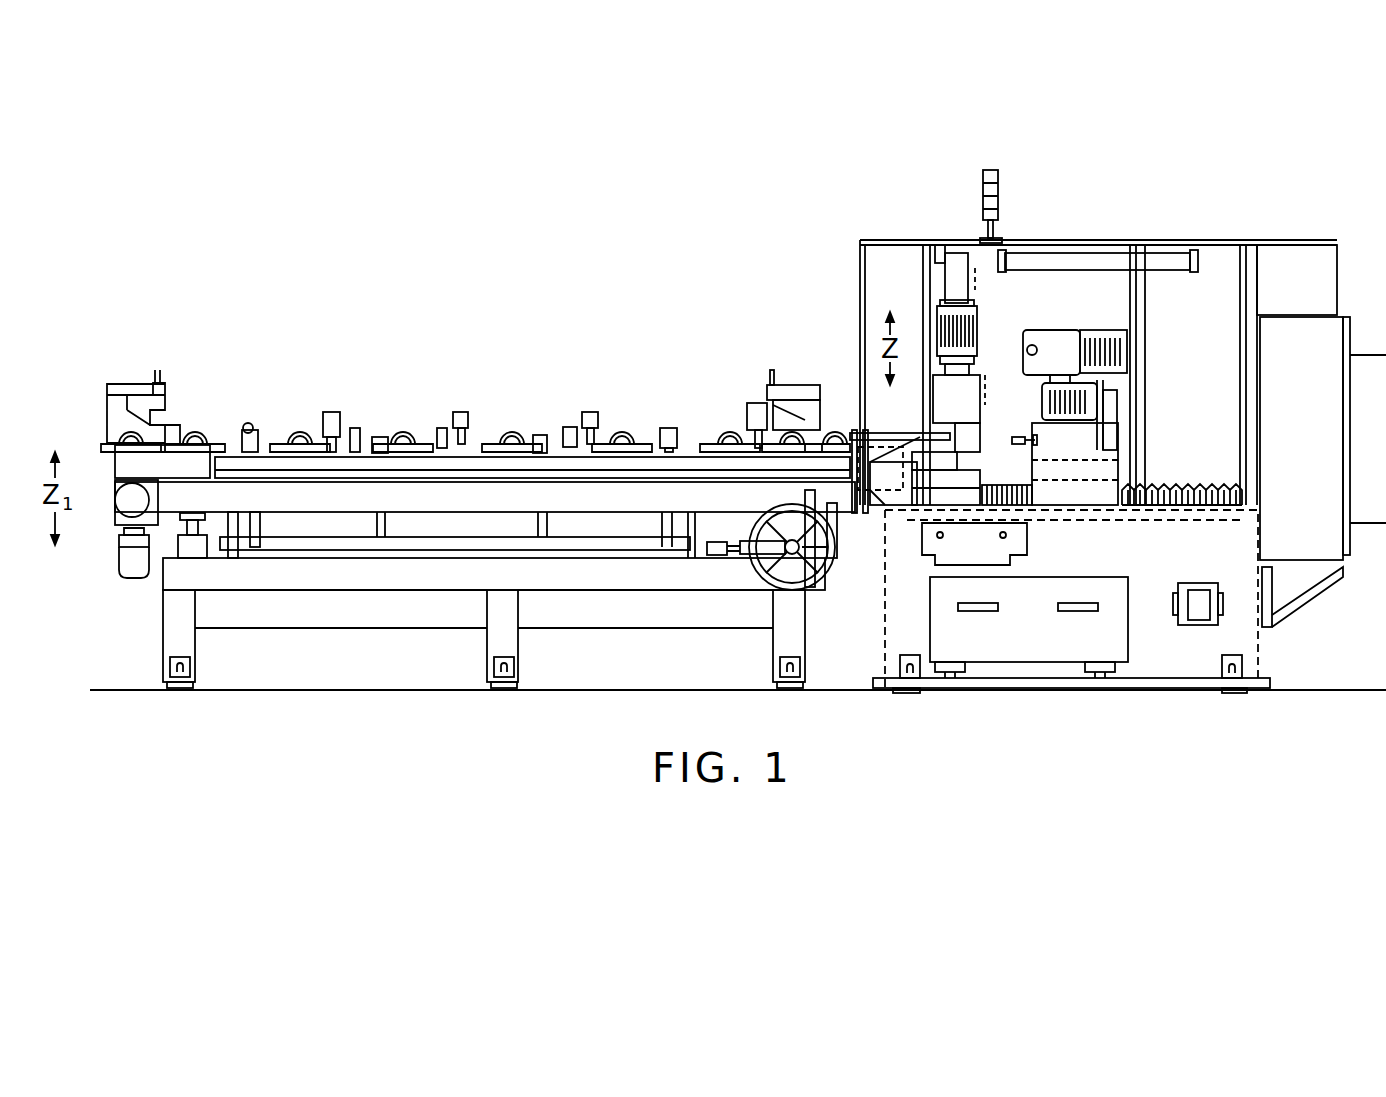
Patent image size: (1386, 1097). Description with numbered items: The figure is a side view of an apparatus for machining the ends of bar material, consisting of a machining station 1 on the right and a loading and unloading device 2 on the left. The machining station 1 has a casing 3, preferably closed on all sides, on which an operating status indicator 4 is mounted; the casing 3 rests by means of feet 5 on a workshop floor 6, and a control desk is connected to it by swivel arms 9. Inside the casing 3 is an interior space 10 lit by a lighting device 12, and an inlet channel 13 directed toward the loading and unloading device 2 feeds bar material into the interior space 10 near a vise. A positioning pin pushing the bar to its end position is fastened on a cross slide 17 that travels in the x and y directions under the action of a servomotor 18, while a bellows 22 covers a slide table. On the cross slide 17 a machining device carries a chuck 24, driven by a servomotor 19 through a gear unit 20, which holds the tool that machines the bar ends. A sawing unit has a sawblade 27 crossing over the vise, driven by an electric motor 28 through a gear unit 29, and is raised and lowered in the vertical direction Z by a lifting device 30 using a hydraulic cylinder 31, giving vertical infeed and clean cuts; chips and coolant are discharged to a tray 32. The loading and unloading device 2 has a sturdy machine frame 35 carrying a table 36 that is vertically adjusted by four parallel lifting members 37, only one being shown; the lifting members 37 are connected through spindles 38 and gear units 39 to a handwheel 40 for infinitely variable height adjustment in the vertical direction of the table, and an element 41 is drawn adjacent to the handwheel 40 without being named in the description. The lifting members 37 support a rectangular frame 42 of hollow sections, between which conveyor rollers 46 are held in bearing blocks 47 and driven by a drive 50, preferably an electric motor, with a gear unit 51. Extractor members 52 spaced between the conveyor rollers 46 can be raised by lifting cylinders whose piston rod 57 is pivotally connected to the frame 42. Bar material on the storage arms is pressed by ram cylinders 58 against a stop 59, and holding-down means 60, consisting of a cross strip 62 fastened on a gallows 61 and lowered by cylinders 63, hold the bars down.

The machining station 1 is at (1064, 188).
The loading and unloading device 2 is at (470, 373).
The casing 3 is at (1196, 240).
The operating status indicator 4 is at (999, 206).
The feet 5 is at (900, 691).
The workshop floor 6 is at (1332, 692).
The swivel arms 9 is at (1200, 598).
The interior space 10 is at (1208, 340).
The lighting device 12 is at (1080, 256).
The inlet channel 13 is at (858, 448).
The cross slide 17 is at (1118, 466).
The servomotor 18 is at (1100, 340).
The servomotor 19 is at (1050, 400).
The gear unit 20 is at (1110, 412).
The bellows 22 is at (1170, 485).
The chuck 24 is at (1026, 442).
The sawblade 27 is at (988, 392).
The electric motor 28 is at (975, 337).
The gear unit 29 is at (940, 395).
The lifting device 30 is at (975, 297).
The hydraulic cylinder 31 is at (948, 297).
The tray 32 is at (1053, 582).
The machine frame 35 is at (347, 592).
The table 36 is at (456, 515).
The lifting members 37 is at (188, 556).
The spindles 38 is at (712, 557).
The gear units 39 is at (800, 555).
The handwheel 40 is at (815, 582).
The handwheel shaft 41 is at (830, 550).
The rectangular frame 42 is at (600, 510).
The conveyor rollers 46 is at (524, 433).
The bearing blocks 47 is at (290, 430).
The drive 50 is at (127, 555).
The gear unit 51 is at (125, 518).
The extractor members 52 is at (378, 432).
The piston rod 57 is at (232, 535).
The ram cylinders 58 is at (756, 405).
The stop 59 is at (470, 422).
The holding-down means 60 is at (135, 383).
The gallows 61 is at (800, 380).
The cross strip 62 is at (775, 392).
The cylinders 63 is at (778, 385).